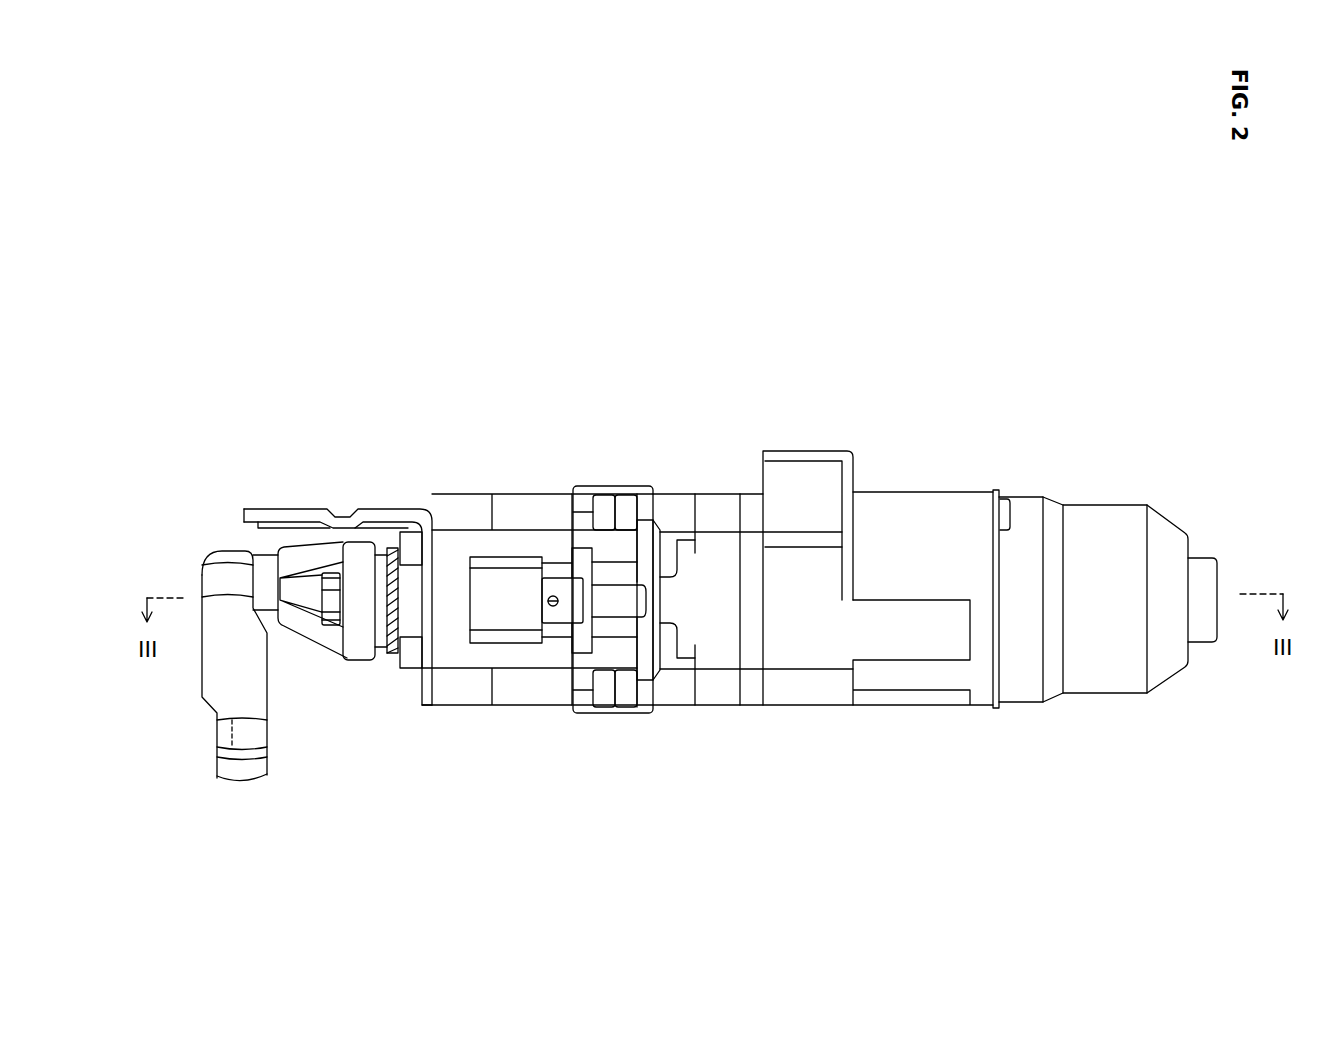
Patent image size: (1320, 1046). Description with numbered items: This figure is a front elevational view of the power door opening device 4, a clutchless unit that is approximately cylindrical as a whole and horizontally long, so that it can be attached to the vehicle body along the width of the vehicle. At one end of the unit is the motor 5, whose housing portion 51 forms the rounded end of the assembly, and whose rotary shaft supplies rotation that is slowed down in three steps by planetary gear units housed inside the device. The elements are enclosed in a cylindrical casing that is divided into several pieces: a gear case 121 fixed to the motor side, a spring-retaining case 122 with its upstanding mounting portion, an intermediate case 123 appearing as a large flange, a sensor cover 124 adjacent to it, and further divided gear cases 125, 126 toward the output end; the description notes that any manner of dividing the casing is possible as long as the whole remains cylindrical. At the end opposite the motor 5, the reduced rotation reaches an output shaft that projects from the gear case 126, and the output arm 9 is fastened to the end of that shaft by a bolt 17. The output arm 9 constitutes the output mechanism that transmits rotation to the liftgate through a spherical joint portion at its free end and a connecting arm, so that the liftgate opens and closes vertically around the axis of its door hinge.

The power door opening device 4 is at (749, 392).
The motor 5 is at (1099, 494).
The motor housing 51 is at (1120, 503).
The output arm 9 is at (313, 640).
The bolt 17 is at (333, 627).
The gear case 121 is at (923, 492).
The spring-retaining case 122 is at (753, 500).
The intermediate case 123 is at (682, 705).
The sensor cover 124 is at (643, 714).
The gear case 125 is at (547, 705).
The gear case 126 is at (457, 506).